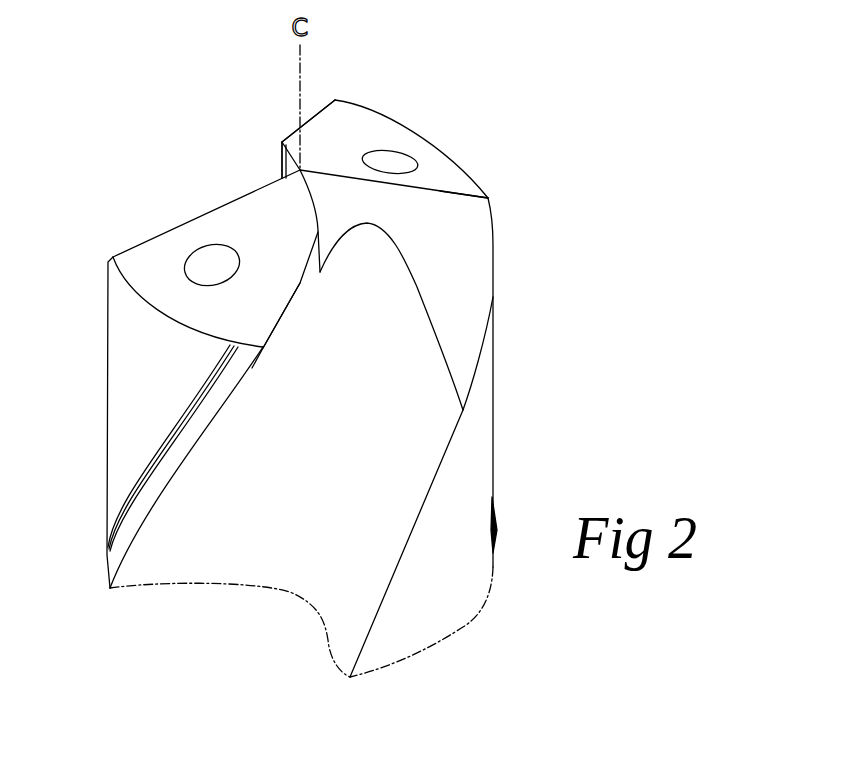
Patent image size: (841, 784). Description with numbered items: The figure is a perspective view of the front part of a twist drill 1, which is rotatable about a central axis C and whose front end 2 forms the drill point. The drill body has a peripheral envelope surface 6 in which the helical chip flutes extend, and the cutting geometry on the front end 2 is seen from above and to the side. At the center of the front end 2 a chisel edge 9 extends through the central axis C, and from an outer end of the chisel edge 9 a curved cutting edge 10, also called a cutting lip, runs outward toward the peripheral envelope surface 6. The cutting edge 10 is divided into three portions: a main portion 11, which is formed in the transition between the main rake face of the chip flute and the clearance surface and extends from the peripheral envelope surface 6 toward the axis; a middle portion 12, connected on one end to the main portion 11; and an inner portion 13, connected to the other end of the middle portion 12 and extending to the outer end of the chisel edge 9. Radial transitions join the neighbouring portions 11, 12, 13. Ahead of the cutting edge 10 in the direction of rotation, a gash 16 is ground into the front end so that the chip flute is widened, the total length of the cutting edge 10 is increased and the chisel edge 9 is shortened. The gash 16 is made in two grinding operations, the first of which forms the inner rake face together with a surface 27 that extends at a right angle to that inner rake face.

The twist drill 1 is at (100, 242).
The front end 2 is at (413, 142).
The peripheral envelope surface 6 is at (149, 386).
The chisel edge 9 is at (302, 170).
The cutting edge 10 is at (290, 135).
The main portion 11 is at (280, 322).
The middle portion 12 is at (322, 228).
The inner portion 13 is at (317, 203).
The gash 16 is at (450, 208).
The surface 27 is at (465, 271).